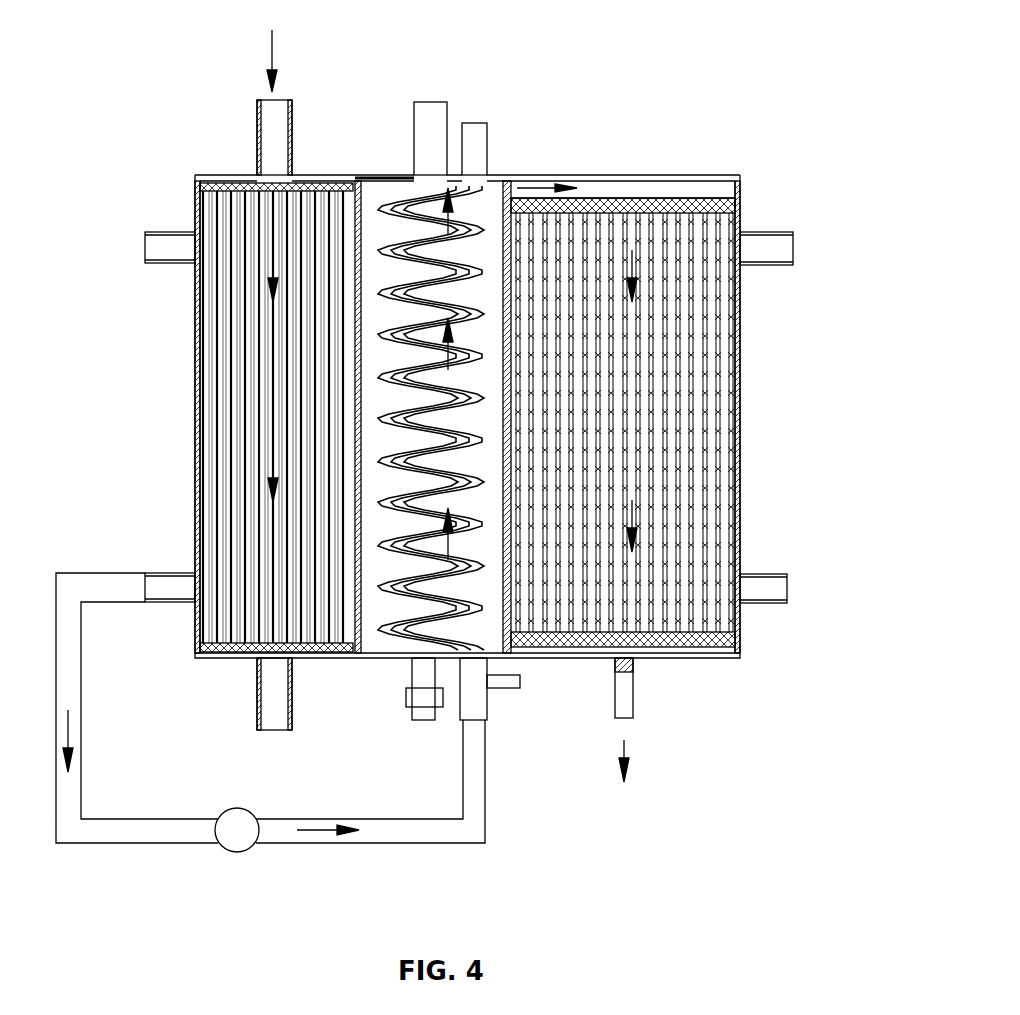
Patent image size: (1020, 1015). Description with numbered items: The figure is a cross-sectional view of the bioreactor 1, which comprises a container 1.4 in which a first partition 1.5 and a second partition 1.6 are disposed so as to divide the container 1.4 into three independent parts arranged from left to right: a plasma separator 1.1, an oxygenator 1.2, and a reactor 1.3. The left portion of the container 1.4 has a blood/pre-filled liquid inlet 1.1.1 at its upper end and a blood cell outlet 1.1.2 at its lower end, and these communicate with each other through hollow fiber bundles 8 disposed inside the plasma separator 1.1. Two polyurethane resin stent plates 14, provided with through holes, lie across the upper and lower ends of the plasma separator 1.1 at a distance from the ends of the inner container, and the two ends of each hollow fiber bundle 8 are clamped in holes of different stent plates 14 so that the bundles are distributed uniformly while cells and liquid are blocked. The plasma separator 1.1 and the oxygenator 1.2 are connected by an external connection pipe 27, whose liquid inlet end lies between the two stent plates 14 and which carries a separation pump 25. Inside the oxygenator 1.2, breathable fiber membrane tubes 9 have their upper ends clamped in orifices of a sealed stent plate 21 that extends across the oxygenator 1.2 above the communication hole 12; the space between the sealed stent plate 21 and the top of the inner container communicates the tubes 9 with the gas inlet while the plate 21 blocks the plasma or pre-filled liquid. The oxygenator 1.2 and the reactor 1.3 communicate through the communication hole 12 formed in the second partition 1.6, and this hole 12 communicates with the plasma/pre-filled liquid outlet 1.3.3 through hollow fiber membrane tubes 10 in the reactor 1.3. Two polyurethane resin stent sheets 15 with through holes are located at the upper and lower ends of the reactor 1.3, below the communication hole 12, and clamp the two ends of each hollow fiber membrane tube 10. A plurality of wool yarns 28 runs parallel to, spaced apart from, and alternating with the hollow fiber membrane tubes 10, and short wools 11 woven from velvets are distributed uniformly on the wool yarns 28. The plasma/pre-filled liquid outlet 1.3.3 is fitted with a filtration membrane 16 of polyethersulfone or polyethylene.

The bioreactor 1 is at (652, 175).
The plasma separator 1.1 is at (223, 353).
The blood/pre-filled liquid inlet 1.1.1 is at (257, 110).
The blood cell outlet 1.1.2 is at (257, 720).
The oxygenator 1.2 is at (490, 213).
The reactor 1.3 is at (742, 644).
The plasma/pre-filled liquid outlet 1.3.3 is at (752, 773).
The container 1.4 is at (617, 175).
The first partition 1.5 is at (355, 535).
The second partition 1.6 is at (507, 437).
The hollow fiber bundles 8 is at (232, 427).
The breathable fiber membrane tubes 9 is at (385, 254).
The hollow fiber membrane tubes 10 is at (729, 471).
The wools 11 is at (735, 609).
The communication hole 12 is at (512, 185).
The polyurethane resin stent plates 14 is at (196, 175).
The polyurethane resin stent sheets 15 is at (742, 190).
The filtration membrane 16 is at (615, 683).
The sealed stent plate 21 is at (393, 175).
The separation pump 25 is at (242, 850).
The external connection pipe 27 is at (375, 832).
The wool yarns 28 is at (733, 525).